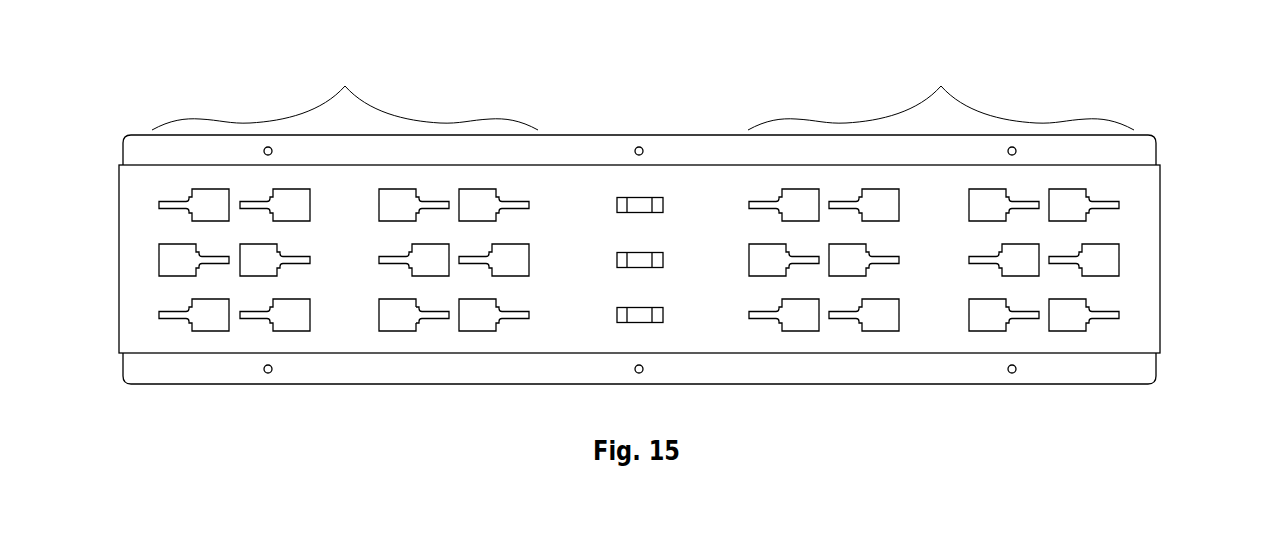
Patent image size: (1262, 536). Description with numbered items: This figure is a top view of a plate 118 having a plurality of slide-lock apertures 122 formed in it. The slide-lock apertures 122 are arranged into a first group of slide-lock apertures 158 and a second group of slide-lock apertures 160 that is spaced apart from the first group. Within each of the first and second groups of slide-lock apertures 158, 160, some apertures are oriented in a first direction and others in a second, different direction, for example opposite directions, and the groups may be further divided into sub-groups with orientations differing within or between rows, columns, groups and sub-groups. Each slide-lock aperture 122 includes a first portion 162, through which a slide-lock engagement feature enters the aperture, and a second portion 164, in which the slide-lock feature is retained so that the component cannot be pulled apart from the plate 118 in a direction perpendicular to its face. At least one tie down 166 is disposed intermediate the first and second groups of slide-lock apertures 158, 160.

The plate 118 is at (683, 248).
The slide-lock aperture 122 is at (177, 386).
The first group of slide-lock apertures 158 is at (345, 198).
The second group of slide-lock apertures 160 is at (941, 198).
The first portion 162 is at (369, 363).
The second portion 164 is at (397, 384).
The tie down 166 is at (696, 169).